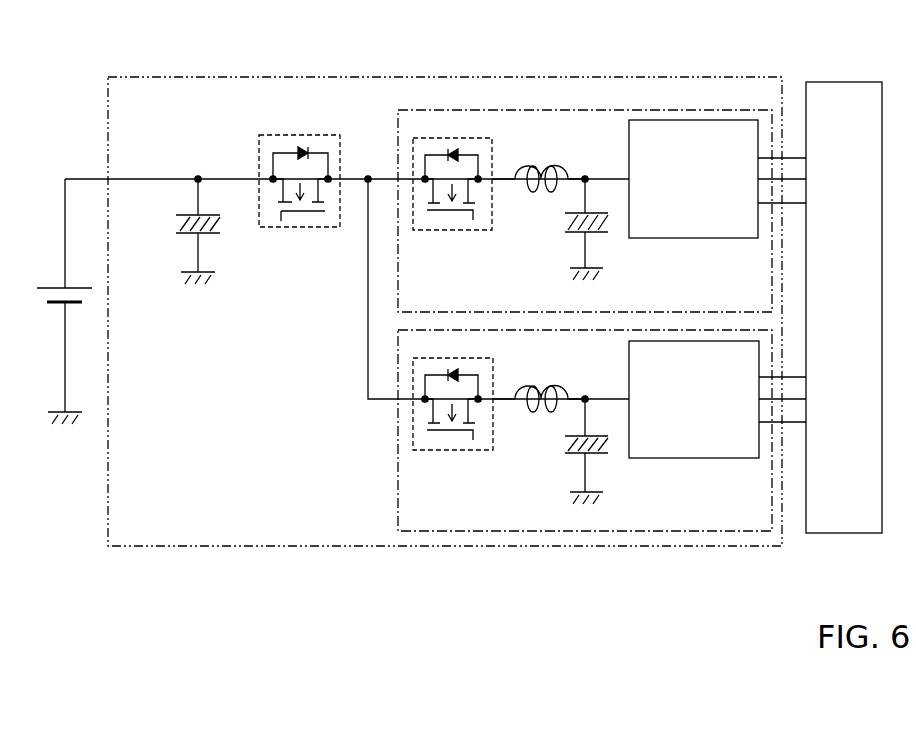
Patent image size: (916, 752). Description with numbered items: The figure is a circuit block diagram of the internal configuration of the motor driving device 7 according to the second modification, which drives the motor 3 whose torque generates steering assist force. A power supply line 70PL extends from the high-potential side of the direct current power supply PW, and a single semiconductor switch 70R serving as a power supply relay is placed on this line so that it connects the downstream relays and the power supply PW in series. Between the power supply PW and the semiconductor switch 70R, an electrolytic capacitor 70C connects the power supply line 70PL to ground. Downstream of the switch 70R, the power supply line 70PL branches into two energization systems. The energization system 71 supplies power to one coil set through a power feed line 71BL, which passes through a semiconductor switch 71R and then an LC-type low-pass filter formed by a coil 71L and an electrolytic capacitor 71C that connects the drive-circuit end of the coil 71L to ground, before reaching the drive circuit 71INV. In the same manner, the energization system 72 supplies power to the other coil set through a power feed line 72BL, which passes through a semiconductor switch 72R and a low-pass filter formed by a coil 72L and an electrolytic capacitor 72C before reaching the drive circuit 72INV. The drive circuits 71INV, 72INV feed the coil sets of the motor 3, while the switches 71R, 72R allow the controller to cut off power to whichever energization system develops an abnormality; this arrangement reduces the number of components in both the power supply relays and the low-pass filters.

The motor driving device 7 is at (600, 76).
The motor 3 is at (840, 81).
The direct current power supply PW is at (54, 286).
The power supply line 70PL is at (153, 182).
The electrolytic capacitor 70C is at (220, 234).
The semiconductor switch 70R is at (300, 228).
The energization system 71 is at (397, 118).
The semiconductor switch 71R is at (445, 232).
The power feed line 71BL is at (507, 176).
The coil 71L is at (562, 167).
The electrolytic capacitor 71C is at (565, 236).
The drive circuit 71INV is at (668, 240).
The energization system 72 is at (398, 480).
The semiconductor switch 72R is at (445, 452).
The power feed line 72BL is at (507, 396).
The coil 72L is at (564, 387).
The electrolytic capacitor 72C is at (565, 456).
The drive circuit 72INV is at (668, 460).